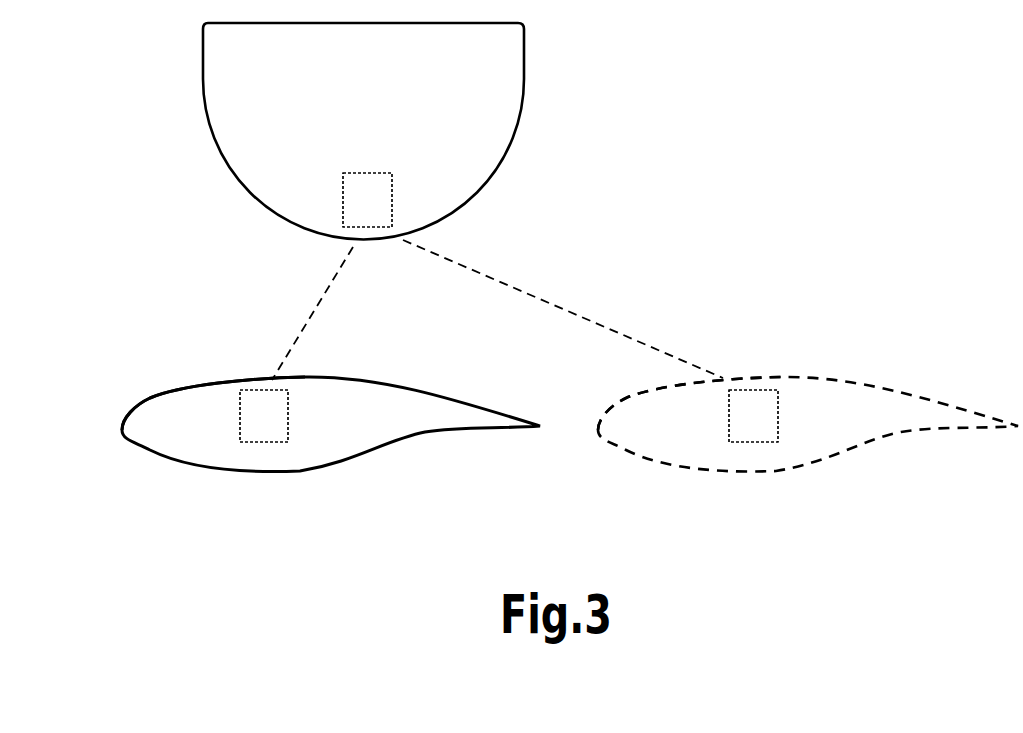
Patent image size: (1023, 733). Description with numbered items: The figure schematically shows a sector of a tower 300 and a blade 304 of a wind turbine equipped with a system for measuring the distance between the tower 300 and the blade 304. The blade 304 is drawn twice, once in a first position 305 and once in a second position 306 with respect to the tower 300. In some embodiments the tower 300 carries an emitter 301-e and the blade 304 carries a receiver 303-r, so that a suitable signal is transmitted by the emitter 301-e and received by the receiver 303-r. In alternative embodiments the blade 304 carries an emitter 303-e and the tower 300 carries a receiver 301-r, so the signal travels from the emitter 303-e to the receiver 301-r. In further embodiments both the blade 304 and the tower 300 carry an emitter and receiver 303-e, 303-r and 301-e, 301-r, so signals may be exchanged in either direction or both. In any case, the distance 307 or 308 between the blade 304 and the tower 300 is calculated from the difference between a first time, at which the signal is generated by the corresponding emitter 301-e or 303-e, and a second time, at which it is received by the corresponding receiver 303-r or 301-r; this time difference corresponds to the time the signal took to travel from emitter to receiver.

The tower 300 is at (228, 101).
The receiver 301-r is at (357, 183).
The emitter 301-e is at (378, 183).
The receiver 303-r is at (253, 430).
The emitter 303-e is at (270, 430).
The blade 304 is at (165, 437).
The first position 305 is at (331, 424).
The second position 306 is at (808, 424).
The distance 307 is at (630, 336).
The distance 308 is at (300, 337).